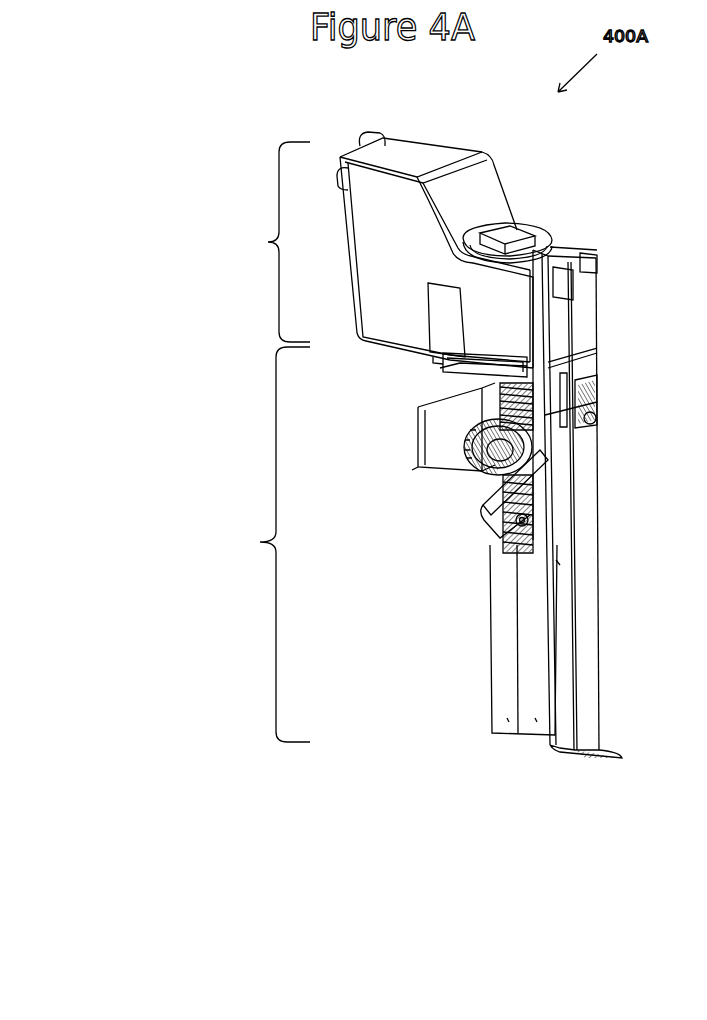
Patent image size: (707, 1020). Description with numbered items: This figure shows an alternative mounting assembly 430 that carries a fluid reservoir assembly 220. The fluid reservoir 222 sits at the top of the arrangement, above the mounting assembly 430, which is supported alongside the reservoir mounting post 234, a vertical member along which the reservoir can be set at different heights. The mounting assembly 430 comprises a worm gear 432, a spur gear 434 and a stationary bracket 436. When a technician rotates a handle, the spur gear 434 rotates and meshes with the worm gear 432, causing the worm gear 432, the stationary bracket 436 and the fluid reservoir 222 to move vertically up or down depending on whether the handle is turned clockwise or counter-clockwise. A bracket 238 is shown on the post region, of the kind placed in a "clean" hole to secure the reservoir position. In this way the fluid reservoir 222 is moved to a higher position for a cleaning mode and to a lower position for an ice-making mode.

The fluid reservoir assembly 220 is at (362, 250).
The fluid reservoir 222 is at (350, 258).
The mounting assembly 430 is at (431, 502).
The stationary bracket 436 is at (417, 408).
The spur gear 434 is at (490, 465).
The worm gear 432 is at (505, 538).
The bracket 238 is at (583, 407).
The reservoir mounting post 234 is at (598, 608).